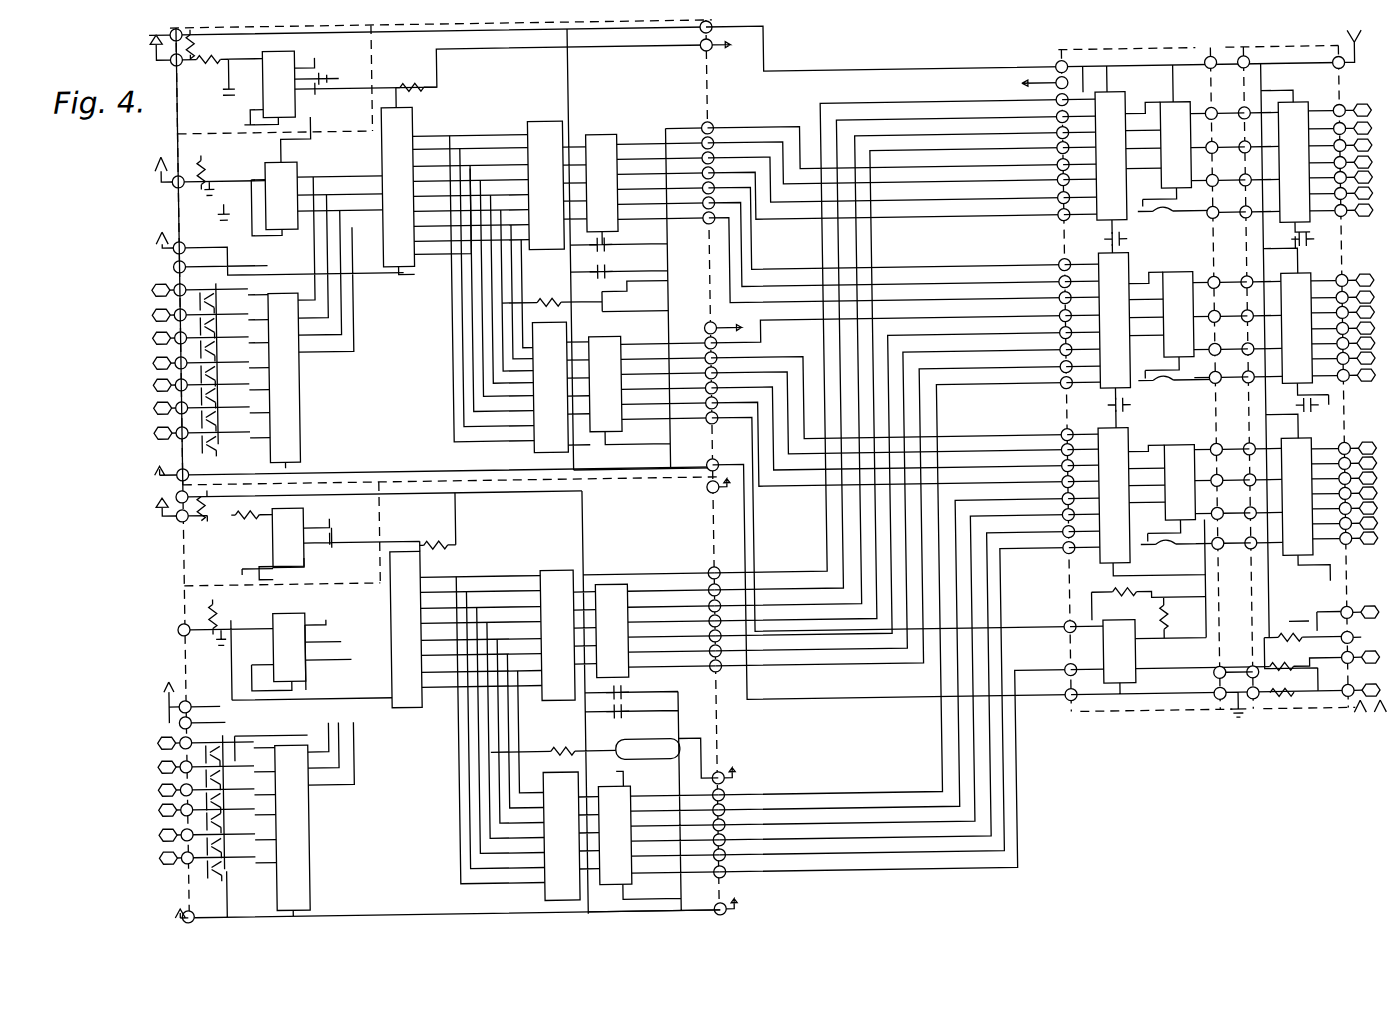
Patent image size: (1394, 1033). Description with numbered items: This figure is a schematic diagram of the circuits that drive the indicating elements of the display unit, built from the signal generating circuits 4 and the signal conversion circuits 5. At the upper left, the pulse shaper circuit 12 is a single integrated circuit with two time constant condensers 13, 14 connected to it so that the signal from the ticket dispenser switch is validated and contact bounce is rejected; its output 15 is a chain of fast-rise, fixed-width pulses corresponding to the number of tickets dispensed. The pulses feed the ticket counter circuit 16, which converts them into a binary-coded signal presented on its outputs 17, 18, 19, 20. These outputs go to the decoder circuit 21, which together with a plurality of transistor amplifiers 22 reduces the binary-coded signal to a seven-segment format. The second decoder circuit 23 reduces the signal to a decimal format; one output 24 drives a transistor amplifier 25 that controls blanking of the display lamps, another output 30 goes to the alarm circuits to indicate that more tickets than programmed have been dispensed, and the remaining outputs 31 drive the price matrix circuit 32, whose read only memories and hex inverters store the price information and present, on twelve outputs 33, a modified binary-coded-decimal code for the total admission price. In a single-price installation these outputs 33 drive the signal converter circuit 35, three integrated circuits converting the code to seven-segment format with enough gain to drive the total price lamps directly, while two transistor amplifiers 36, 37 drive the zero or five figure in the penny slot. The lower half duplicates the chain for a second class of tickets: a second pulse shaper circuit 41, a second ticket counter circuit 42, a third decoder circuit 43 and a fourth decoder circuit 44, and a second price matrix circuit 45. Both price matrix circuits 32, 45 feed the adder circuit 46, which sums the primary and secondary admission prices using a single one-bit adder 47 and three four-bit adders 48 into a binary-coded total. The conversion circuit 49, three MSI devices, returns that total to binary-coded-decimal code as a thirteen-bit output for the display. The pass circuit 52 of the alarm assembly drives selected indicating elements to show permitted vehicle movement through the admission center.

The signal generating circuits 4 is at (176, 124).
The signal conversion circuits 5 is at (706, 84).
The pulse shaper circuit 12 is at (298, 55).
The condenser 13 is at (220, 69).
The condenser 14 is at (318, 63).
The output 15 is at (256, 106).
The ticket counter circuit 16 is at (260, 200).
The output 17 is at (298, 156).
The output 18 is at (295, 175).
The output 19 is at (295, 192).
The output 20 is at (295, 207).
The decoder circuit 21 is at (290, 273).
The transistor amplifiers 22 is at (190, 430).
The second decoder circuit 23 is at (404, 277).
The output 24 is at (408, 259).
The transistor amplifier 25 is at (598, 298).
The output 30 is at (411, 112).
The remaining outputs 31 is at (418, 145).
The price matrix circuit 32 is at (546, 119).
The outputs 33 is at (602, 132).
The signal converter circuit 35 is at (1290, 111).
The transistor amplifier 36 is at (1308, 631).
The transistor amplifier 37 is at (1308, 701).
The second pulse shaper circuit 41 is at (313, 505).
The second ticket counter circuit 42 is at (298, 612).
The third decoder circuit 43 is at (308, 741).
The fourth decoder circuit 44 is at (418, 565).
The second price matrix circuit 45 is at (563, 570).
The adder circuit 46 is at (1116, 70).
The one-bit adder 47 is at (1092, 653).
The four-bit adders 48 is at (1098, 98).
The conversion circuit 49 is at (1176, 110).
The pass circuit 52 is at (1293, 56).